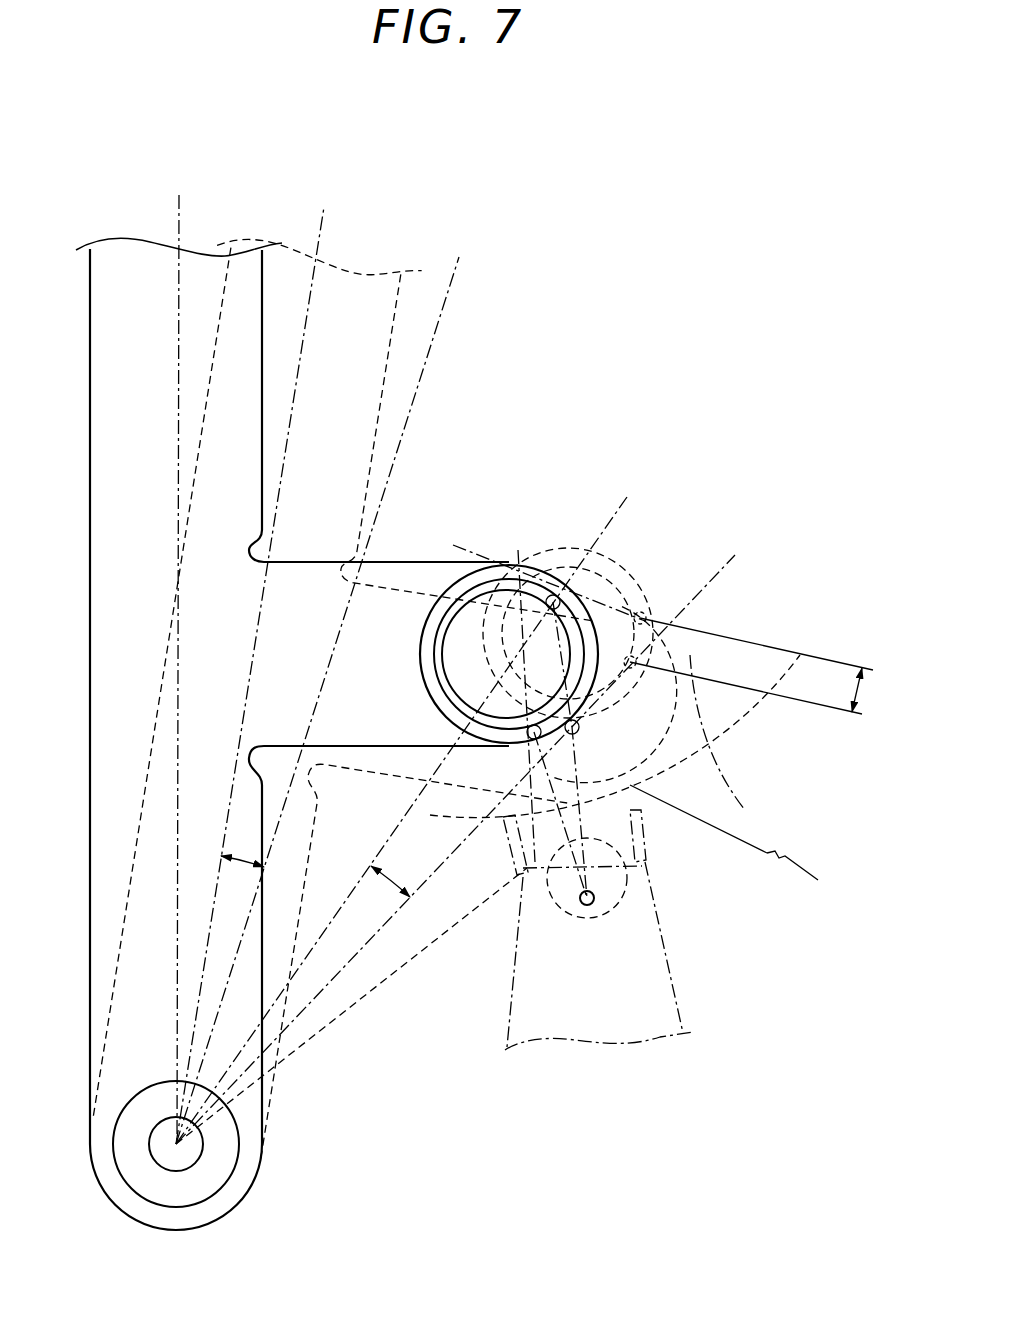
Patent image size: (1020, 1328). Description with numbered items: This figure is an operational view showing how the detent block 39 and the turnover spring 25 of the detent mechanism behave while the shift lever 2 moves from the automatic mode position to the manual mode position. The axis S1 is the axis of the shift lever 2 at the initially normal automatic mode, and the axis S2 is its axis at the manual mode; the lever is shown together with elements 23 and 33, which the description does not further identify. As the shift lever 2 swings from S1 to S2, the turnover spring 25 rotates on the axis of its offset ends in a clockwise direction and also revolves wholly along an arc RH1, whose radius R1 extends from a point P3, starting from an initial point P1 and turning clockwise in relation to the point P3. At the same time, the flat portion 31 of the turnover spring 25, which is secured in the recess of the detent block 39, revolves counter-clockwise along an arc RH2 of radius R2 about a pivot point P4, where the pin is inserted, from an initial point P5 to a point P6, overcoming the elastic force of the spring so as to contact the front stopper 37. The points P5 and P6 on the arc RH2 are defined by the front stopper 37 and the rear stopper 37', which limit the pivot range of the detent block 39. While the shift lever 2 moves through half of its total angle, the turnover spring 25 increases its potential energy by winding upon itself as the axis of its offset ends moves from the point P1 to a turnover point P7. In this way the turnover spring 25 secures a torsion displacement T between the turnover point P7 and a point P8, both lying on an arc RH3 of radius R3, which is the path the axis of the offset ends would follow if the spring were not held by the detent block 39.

The shift lever 2 is at (91, 645).
The bracket 23 is at (326, 572).
The turnover spring 25 is at (405, 624).
The flat portion 31 is at (420, 689).
The pillar 33 is at (667, 985).
The front stopper 37 is at (667, 838).
The rear stopper 37' is at (489, 851).
The detent block 39 is at (810, 878).
The axis of the shift lever at the automatic mode position S1 is at (179, 219).
The axis of the shift lever at the manual mode position S2 is at (462, 253).
The initial point P1 is at (555, 595).
The point P3 is at (186, 1149).
The pivot point P4 is at (597, 901).
The initial point of the flat portion P5 is at (579, 725).
The point on arc RH2 P6 is at (531, 724).
The turnover point P7 is at (635, 658).
The point on arc RH3 P8 is at (642, 611).
The radius of arc RH1 R1 is at (385, 977).
The radius of arc RH2 R2 is at (463, 804).
The radius of arc RH3 R3 is at (698, 816).
The arc RH1 is at (735, 795).
The arc RH2 is at (578, 748).
The arc RH3 is at (697, 708).
The torsion displacement T is at (755, 666).